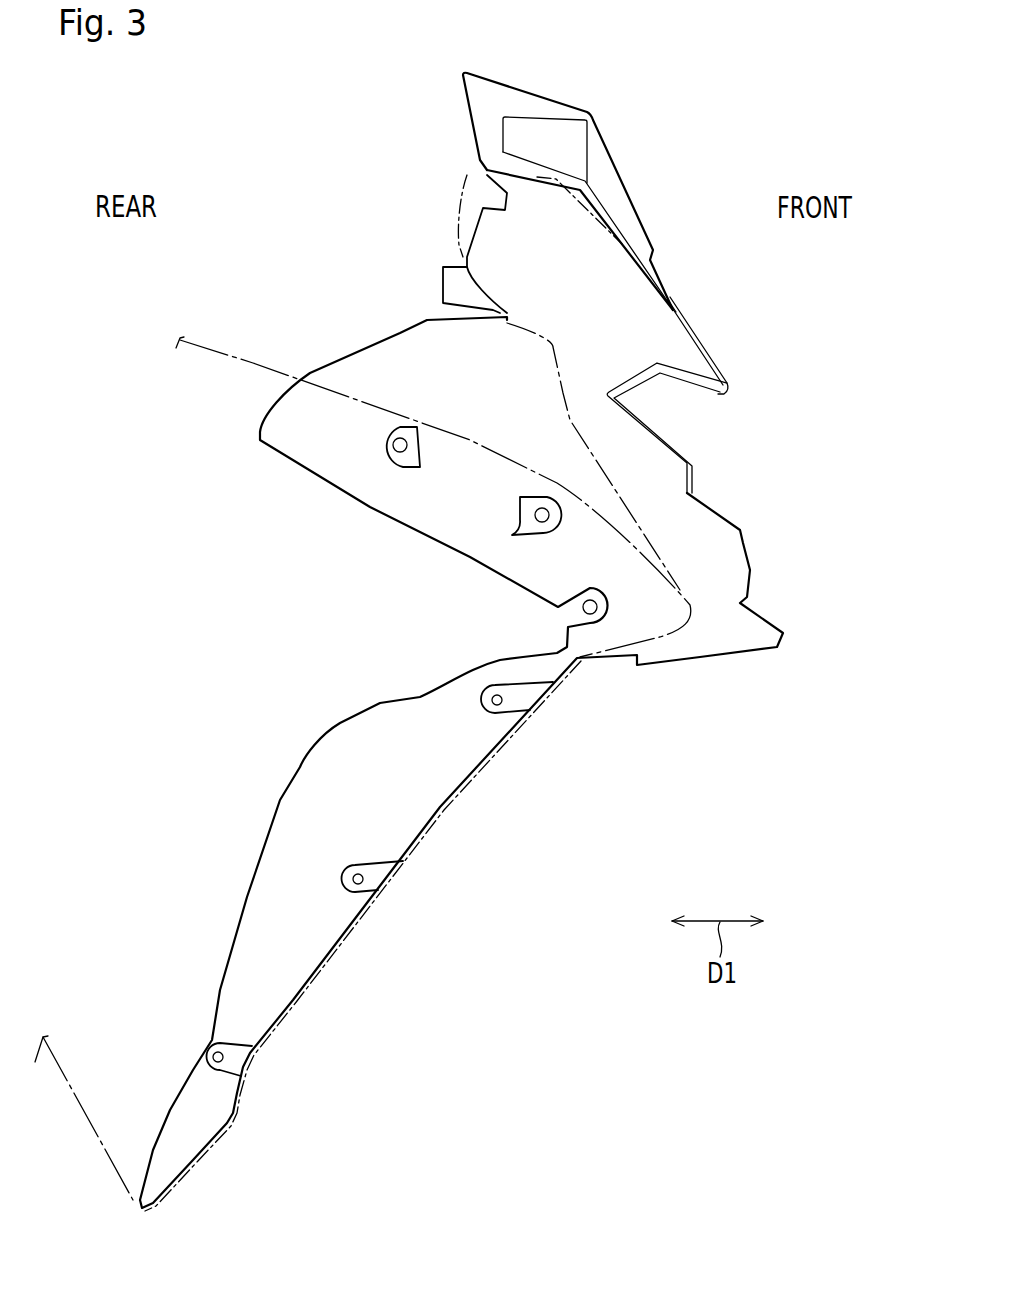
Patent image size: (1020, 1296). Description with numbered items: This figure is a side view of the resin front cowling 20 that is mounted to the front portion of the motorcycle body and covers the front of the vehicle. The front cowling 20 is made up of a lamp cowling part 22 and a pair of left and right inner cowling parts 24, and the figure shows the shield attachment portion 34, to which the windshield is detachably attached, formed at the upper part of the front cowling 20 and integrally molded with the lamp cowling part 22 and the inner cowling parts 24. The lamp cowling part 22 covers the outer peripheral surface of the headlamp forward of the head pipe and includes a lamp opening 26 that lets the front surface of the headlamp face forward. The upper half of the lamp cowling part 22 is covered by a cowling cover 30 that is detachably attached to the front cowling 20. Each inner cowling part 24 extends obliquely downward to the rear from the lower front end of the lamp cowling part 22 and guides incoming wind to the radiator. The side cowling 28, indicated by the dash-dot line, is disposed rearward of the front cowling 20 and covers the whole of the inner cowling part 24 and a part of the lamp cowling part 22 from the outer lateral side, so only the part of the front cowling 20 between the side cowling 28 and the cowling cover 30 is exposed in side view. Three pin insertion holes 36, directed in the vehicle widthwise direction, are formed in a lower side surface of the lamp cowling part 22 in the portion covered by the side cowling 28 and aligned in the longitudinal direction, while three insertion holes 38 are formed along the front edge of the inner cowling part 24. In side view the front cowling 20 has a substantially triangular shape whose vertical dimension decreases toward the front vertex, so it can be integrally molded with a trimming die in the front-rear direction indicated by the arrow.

The front cowling 20 is at (440, 270).
The lamp cowling part 22 is at (683, 348).
The inner cowling part 24 is at (317, 790).
The lamp opening 26 is at (717, 393).
The side cowling 28 is at (220, 350).
The cowling cover 30 is at (680, 312).
The shield attachment portion 34 is at (606, 158).
The pin insertion hole 36 is at (400, 458).
The insertion hole 38 is at (500, 707).